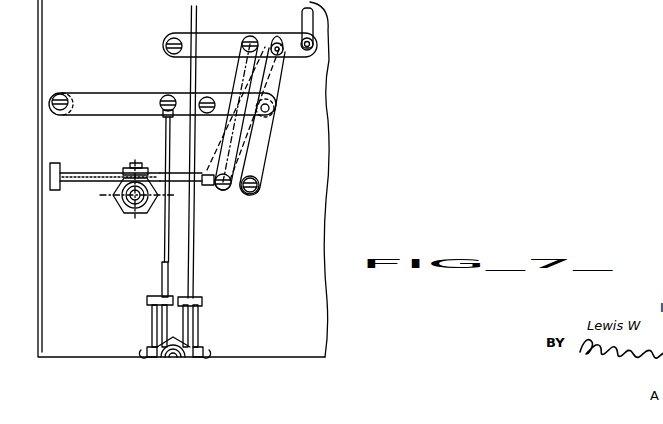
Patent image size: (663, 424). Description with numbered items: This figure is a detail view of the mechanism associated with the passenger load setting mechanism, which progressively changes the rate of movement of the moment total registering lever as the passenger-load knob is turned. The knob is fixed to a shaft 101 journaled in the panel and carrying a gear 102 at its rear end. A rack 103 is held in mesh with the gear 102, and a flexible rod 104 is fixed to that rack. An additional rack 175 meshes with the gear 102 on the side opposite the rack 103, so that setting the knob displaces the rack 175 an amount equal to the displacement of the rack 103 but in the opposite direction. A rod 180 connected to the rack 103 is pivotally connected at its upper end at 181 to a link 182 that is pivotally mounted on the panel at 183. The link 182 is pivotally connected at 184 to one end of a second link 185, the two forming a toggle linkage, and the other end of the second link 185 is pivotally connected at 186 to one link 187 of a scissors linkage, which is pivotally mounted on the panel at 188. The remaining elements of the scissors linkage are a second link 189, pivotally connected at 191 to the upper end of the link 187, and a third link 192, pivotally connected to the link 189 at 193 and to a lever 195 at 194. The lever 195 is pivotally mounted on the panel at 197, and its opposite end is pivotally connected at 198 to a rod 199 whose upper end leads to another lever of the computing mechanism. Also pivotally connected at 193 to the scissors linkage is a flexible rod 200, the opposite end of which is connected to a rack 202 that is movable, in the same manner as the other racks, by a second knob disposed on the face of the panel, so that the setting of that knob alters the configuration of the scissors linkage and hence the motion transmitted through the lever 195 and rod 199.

The shaft 101 is at (190, 352).
The gear 102 is at (158, 350).
The rack 103 is at (146, 300).
The flexible rod 104 is at (160, 276).
The rack 175 is at (197, 319).
The rod 180 is at (162, 242).
The pivotal connection 181 is at (168, 95).
The link 182 is at (131, 114).
The pivot 183 is at (62, 110).
The pivotal connection 184 is at (209, 97).
The second link 185 is at (220, 116).
The pivotal connection 186 is at (270, 107).
The link 187 is at (266, 140).
The pivot 188 is at (258, 190).
The second link 189 is at (272, 78).
The pivotal connection 191 is at (280, 41).
The third link 192 is at (250, 165).
The pivotal connection 193 is at (224, 191).
The pivotal connection 194 is at (252, 36).
The lever 195 is at (213, 36).
The pivot 197 is at (173, 37).
The pivotal connection 198 is at (313, 44).
The rod 199 is at (313, 11).
The flexible rod 200 is at (171, 175).
The rack 202 is at (92, 171).